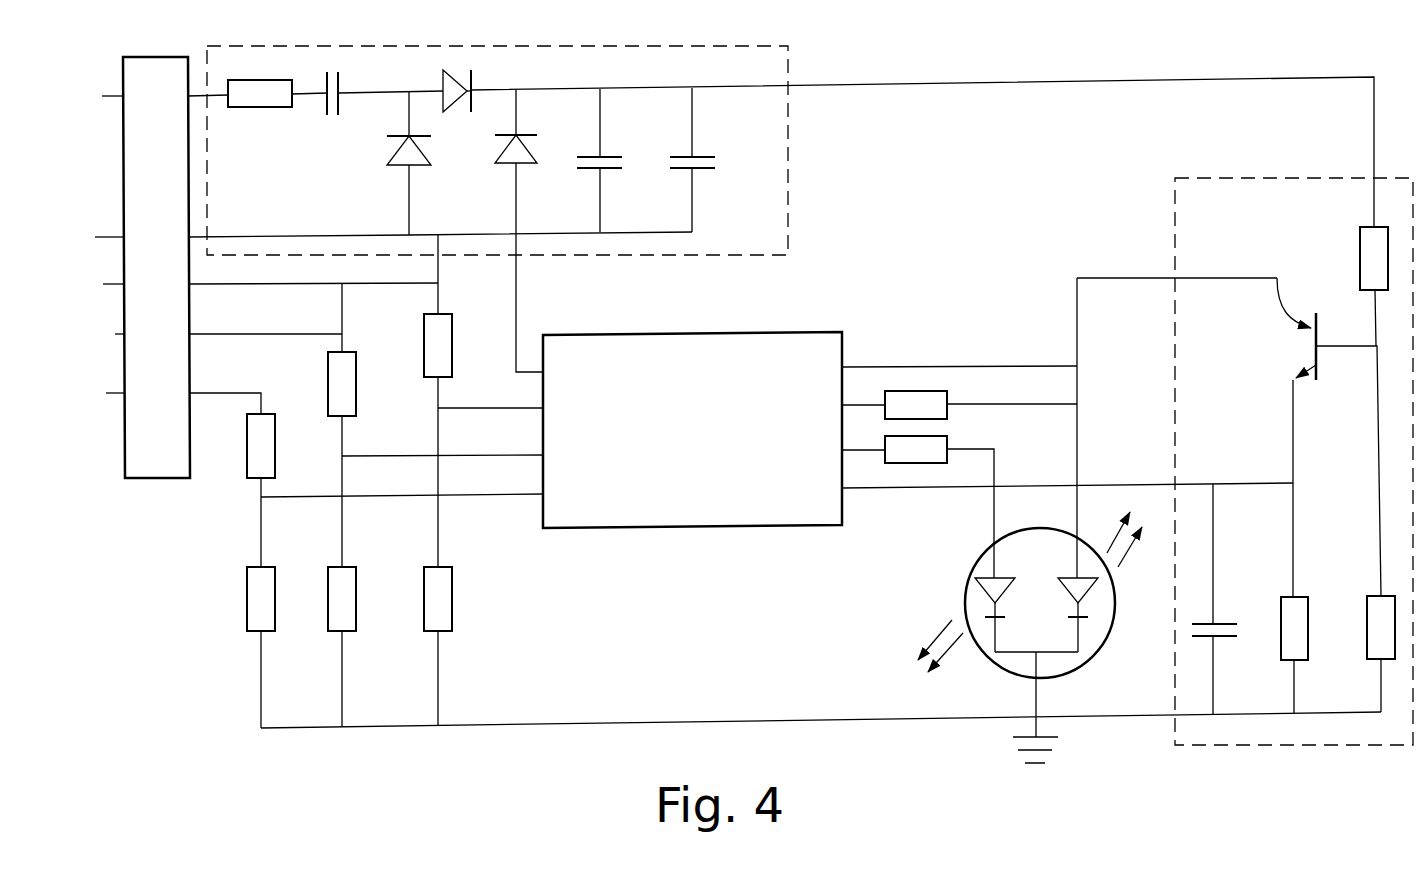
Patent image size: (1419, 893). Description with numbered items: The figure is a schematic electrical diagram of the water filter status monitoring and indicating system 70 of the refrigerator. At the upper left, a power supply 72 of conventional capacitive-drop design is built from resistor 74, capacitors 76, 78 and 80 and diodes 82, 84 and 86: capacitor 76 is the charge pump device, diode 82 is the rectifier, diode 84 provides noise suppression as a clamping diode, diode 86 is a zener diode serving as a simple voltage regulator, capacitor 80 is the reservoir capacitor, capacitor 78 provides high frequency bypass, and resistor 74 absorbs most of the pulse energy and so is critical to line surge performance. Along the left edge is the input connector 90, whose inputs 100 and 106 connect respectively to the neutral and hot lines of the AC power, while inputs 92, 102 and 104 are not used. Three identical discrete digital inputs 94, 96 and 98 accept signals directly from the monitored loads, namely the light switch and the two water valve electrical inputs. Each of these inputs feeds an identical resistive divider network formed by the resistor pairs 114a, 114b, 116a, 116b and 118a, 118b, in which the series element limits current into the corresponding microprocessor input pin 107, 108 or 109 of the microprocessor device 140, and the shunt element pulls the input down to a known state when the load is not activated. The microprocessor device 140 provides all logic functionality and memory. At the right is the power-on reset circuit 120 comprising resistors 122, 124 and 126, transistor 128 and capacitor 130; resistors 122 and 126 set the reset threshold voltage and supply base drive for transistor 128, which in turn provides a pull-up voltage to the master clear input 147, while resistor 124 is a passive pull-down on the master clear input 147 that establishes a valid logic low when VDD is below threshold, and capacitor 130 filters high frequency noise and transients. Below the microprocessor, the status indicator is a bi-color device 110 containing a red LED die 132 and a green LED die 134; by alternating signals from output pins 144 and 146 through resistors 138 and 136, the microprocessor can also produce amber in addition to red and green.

The water filter status monitoring and indicating system 70 is at (236, 577).
The power supply 72 is at (800, 188).
The resistor 74 is at (233, 107).
The capacitor 76 is at (340, 102).
The capacitor 78 is at (703, 157).
The capacitor 80 is at (612, 157).
The diode 82 is at (463, 104).
The diode 84 is at (418, 165).
The diode 86 is at (528, 163).
The input connector 90 is at (160, 478).
The input 92 is at (156, 438).
The discrete digital input 94 is at (183, 397).
The discrete digital input 96 is at (228, 335).
The discrete digital input 98 is at (270, 283).
The input 100 is at (393, 236).
The input 102 is at (157, 170).
The input 104 is at (157, 127).
The input 106 is at (165, 82).
The microprocessor input pin 107 is at (431, 493).
The microprocessor input pin 108 is at (472, 454).
The microprocessor input pin 109 is at (520, 408).
The bi-color device 110 is at (1032, 520).
The resistor 114a is at (247, 458).
The resistor 114b is at (252, 631).
The resistor 116a is at (328, 405).
The resistor 116b is at (358, 595).
The resistor 118a is at (424, 365).
The resistor 118b is at (454, 605).
The power-on reset circuit 120 is at (1172, 213).
The resistor 122 is at (1367, 640).
The resistor 124 is at (1308, 624).
The resistor 126 is at (1358, 270).
The transistor 128 is at (1301, 372).
The capacitor 130 is at (1237, 624).
The red LED die 132 is at (955, 592).
The green LED die 134 is at (1118, 634).
The resistor 136 is at (925, 463).
The resistor 138 is at (912, 391).
The microprocessor device 140 is at (690, 528).
The microprocessor output pin 144 is at (930, 406).
The microprocessor output pin 146 is at (889, 508).
The master clear input 147 is at (1038, 489).